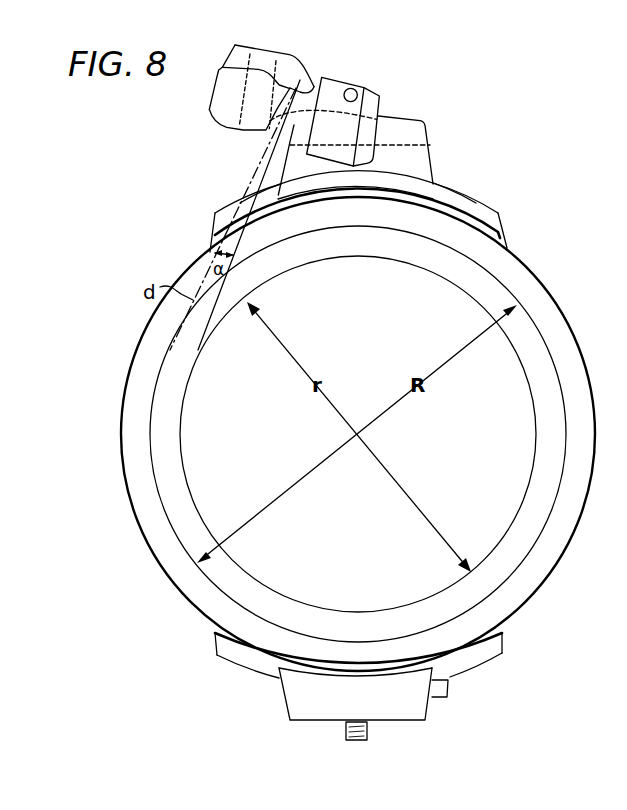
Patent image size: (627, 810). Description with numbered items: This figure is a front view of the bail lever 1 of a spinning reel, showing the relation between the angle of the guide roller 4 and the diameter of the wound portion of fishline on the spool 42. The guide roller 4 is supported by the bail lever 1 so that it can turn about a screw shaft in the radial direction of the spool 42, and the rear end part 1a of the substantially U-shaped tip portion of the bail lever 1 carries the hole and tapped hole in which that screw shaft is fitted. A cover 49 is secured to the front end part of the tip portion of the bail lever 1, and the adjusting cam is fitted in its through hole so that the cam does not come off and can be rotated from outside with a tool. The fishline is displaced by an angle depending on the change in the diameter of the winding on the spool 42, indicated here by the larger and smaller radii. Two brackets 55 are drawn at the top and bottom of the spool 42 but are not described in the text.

The bail lever 1 is at (420, 112).
The rear end part 1a is at (265, 47).
The guide roller 4 is at (309, 74).
The cover 49 is at (372, 93).
The mounting bracket 55 is at (465, 205).
The spool 42 is at (580, 320).